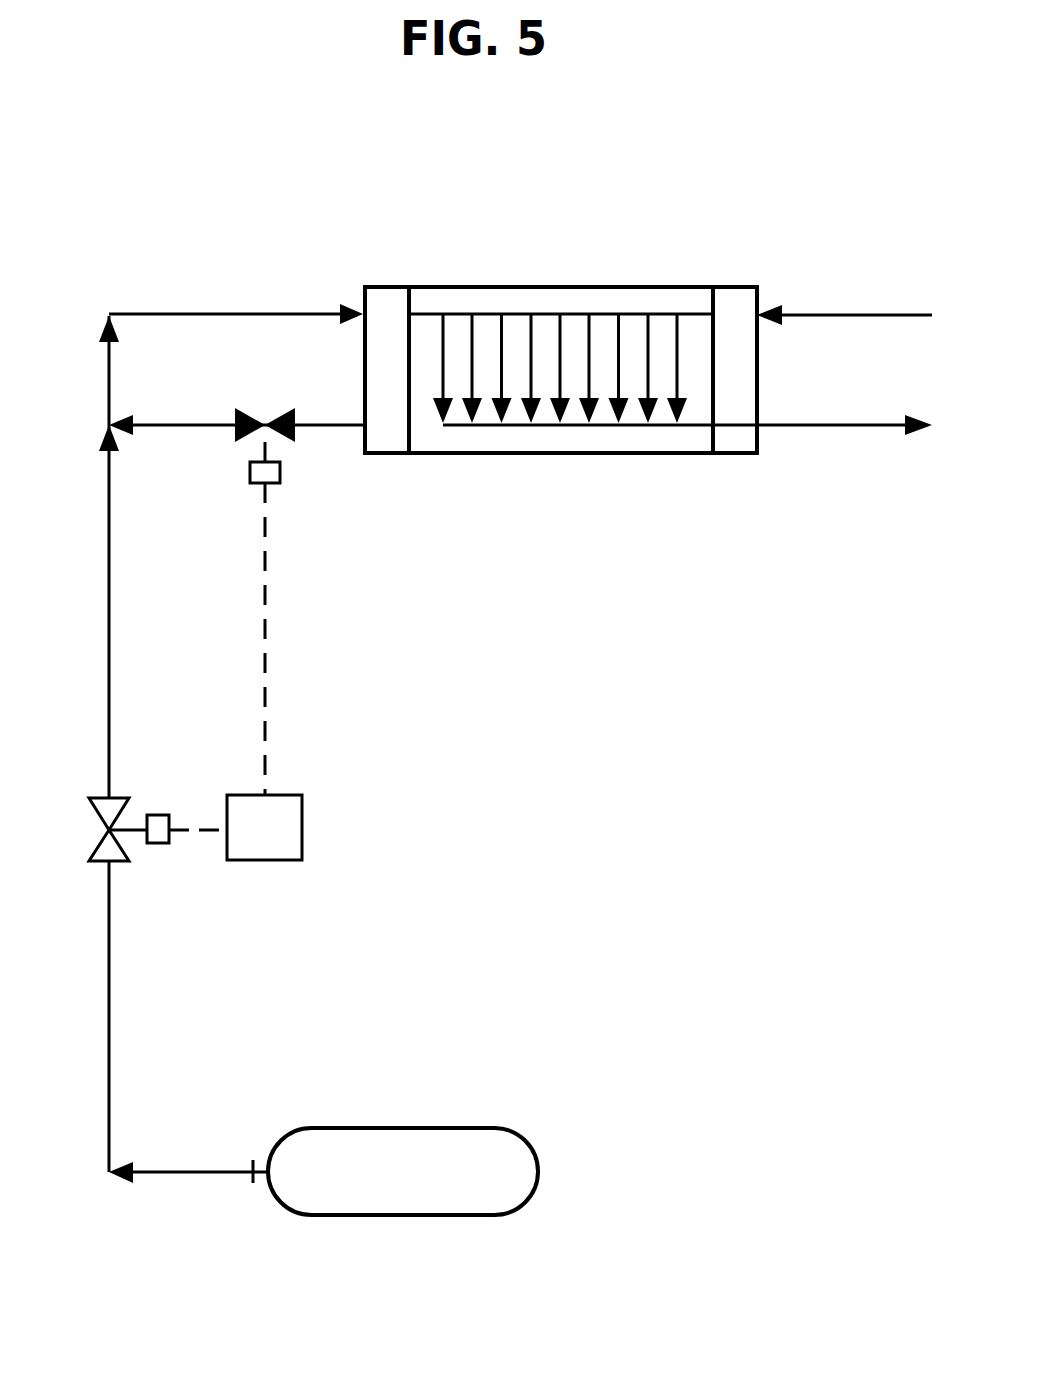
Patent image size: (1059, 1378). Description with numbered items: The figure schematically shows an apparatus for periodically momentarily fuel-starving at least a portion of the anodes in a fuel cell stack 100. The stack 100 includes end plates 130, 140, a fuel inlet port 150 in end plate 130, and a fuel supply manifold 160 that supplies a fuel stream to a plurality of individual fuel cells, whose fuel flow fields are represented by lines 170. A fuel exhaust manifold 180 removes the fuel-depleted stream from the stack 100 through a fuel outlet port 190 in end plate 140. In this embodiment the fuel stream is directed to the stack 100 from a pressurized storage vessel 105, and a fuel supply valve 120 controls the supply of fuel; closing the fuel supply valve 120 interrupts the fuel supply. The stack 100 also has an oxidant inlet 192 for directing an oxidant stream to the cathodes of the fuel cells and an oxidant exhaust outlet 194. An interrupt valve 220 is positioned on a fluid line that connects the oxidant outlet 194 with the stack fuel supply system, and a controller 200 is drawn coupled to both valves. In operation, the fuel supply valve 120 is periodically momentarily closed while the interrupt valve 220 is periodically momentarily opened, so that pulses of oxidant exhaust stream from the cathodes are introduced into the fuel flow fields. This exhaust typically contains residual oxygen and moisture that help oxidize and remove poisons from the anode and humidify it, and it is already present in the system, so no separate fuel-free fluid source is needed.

The fuel cell stack 100 is at (378, 155).
The pressurized storage vessel 105 is at (378, 1140).
The fuel supply valve 120 is at (105, 830).
The end plate 130 is at (393, 295).
The end plate 140 is at (733, 312).
The fuel inlet port 150 is at (373, 310).
The fuel supply manifold 160 is at (485, 313).
The fuel flow fields 170 is at (618, 363).
The fuel exhaust manifold 180 is at (568, 422).
The fuel outlet port 190 is at (730, 422).
The oxidant inlet 192 is at (793, 310).
The oxidant exhaust outlet 194 is at (317, 425).
The controller 200 is at (287, 835).
The interrupt valve 220 is at (265, 422).